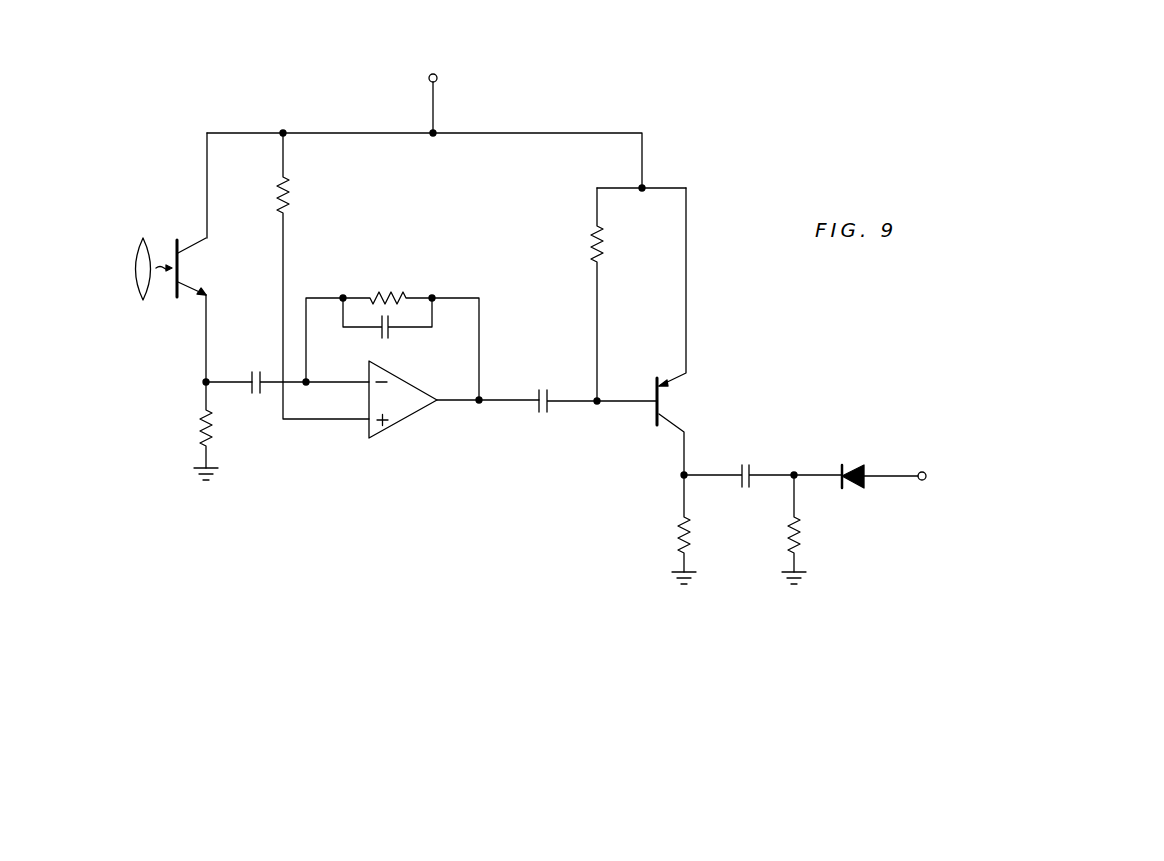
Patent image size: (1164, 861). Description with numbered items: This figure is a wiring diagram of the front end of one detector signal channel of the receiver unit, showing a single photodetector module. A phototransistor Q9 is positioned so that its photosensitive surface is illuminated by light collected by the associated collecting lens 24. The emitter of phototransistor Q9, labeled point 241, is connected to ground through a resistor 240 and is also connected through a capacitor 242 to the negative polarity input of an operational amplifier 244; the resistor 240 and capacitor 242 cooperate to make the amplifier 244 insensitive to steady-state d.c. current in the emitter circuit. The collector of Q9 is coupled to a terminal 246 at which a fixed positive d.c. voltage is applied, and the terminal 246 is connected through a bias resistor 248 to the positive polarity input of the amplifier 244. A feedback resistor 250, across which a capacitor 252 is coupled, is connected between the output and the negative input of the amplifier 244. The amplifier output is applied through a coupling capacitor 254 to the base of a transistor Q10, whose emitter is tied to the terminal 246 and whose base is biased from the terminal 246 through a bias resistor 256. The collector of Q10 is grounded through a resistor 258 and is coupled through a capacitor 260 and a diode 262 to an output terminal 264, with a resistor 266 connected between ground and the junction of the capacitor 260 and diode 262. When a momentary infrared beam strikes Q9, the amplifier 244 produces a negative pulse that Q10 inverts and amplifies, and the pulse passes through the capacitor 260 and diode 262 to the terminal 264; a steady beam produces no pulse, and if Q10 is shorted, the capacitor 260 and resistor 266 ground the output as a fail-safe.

The collecting lens 24 is at (133, 254).
The phototransistor Q9 is at (176, 242).
The resistor 240 is at (201, 432).
The point 241 is at (203, 381).
The capacitor 242 is at (247, 378).
The operational amplifier 244 is at (414, 415).
The terminal 246 is at (439, 78).
The bias resistor 248 is at (290, 198).
The feedback resistor 250 is at (388, 297).
The capacitor 252 is at (390, 327).
The coupling capacitor 254 is at (535, 411).
The bias resistor 256 is at (605, 233).
The transistor Q10 is at (654, 412).
The resistor 258 is at (678, 527).
The capacitor 260 is at (756, 462).
The diode 262 is at (865, 428).
The terminal 264 is at (922, 471).
The resistor 266 is at (800, 540).